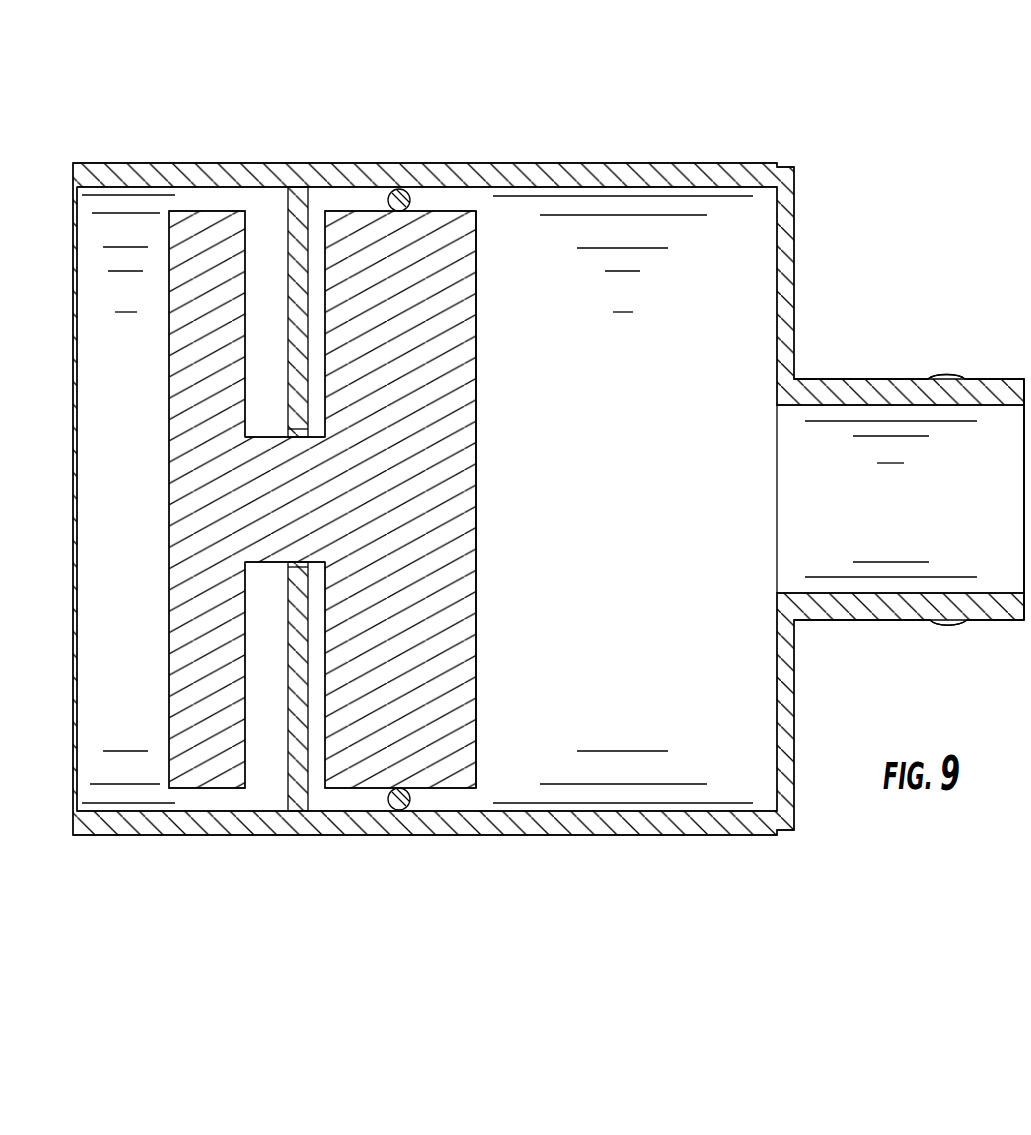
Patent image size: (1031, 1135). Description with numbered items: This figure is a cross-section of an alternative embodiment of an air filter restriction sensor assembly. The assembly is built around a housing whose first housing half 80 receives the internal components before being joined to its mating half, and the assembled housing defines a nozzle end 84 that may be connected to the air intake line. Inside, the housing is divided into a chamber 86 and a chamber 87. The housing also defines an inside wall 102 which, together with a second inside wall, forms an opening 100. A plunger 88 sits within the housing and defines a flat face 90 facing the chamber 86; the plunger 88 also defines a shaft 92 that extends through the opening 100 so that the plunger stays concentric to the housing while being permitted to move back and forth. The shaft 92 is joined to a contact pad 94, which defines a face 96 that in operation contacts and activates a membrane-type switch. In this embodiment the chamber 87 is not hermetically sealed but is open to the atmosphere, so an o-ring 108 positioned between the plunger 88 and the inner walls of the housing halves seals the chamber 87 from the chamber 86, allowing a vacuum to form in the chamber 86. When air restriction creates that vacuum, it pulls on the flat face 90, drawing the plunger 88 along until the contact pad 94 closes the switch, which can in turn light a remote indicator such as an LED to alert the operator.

The first housing half 80 is at (665, 177).
The nozzle end 84 is at (880, 395).
The chamber 86 is at (705, 343).
The chamber 87 is at (124, 200).
The plunger 88 is at (358, 227).
The flat face 90 is at (475, 236).
The shaft 92 is at (322, 515).
The contact pad 94 is at (183, 215).
The face 96 is at (247, 240).
The opening 100 is at (289, 566).
The inside wall 102 is at (310, 213).
The o-ring 108 is at (410, 202).